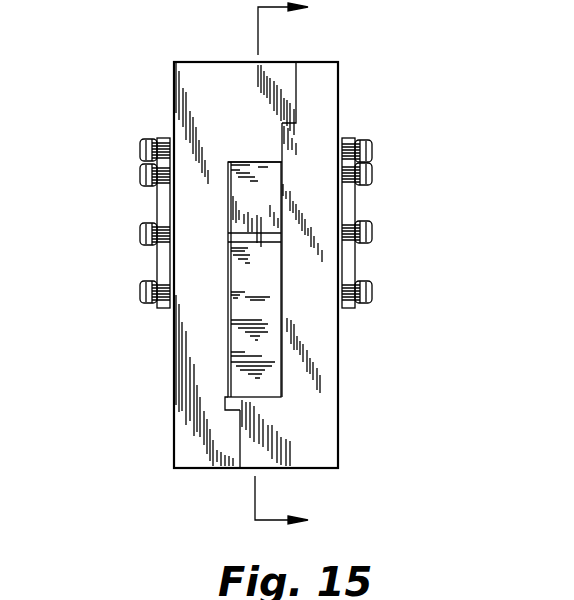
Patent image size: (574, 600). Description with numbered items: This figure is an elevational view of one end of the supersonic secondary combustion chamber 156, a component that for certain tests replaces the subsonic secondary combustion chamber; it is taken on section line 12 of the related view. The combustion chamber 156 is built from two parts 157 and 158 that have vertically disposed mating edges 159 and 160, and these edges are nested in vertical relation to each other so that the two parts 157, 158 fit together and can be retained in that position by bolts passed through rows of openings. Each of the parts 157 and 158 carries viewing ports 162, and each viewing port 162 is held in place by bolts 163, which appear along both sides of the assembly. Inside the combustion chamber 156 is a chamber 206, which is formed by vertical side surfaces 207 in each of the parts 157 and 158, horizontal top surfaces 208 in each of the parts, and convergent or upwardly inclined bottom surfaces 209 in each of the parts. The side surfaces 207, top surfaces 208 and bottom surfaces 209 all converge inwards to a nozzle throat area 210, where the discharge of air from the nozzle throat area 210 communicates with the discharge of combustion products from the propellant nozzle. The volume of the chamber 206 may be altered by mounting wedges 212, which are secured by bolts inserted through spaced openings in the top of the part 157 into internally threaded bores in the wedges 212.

The section line 12- 12 is at (300, 267).
The supersonic secondary combustion chamber 156 is at (349, 381).
The part 157 is at (174, 109).
The part 158 is at (339, 109).
The mating edge 159 is at (312, 109).
The mating edge 160 is at (238, 443).
The viewing port 162 is at (157, 205).
The bolt 163 is at (142, 183).
The chamber 206 is at (254, 279).
The vertical side surface 207 is at (229, 328).
The horizontal top surface 208 is at (268, 149).
The bottom surface 209 is at (270, 398).
The nozzle throat area 210 is at (229, 232).
The wedge 212 is at (269, 189).